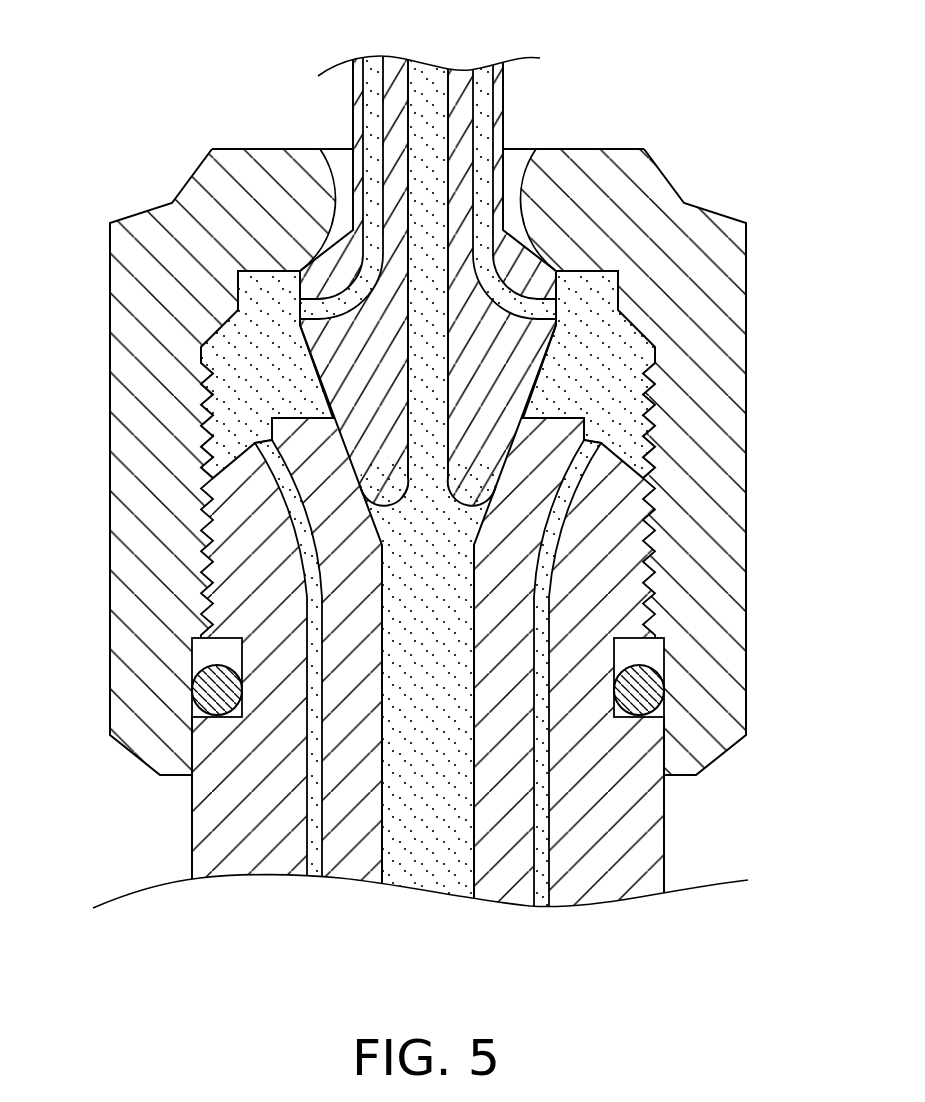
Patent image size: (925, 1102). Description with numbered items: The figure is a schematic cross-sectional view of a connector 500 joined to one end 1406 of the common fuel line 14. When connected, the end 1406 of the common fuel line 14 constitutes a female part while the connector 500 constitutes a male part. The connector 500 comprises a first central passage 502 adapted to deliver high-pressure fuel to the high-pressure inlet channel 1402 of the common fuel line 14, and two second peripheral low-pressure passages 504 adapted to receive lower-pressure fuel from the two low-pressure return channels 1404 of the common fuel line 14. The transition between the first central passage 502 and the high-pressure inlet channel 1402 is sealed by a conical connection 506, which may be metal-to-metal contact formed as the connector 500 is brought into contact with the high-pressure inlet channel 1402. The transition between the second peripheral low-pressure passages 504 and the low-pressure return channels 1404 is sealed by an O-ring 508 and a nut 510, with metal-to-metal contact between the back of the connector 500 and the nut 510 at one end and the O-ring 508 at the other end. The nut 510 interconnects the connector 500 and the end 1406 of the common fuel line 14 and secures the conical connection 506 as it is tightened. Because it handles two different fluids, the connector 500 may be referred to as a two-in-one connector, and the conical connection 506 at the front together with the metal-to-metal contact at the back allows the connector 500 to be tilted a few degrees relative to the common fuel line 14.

The connector 500 is at (429, 496).
The first central passage 502 is at (431, 88).
The second peripheral low-pressure passage 504 is at (374, 84).
The conical connection 506 is at (376, 428).
The O-ring 508 is at (213, 697).
The nut 510 is at (704, 470).
The high-pressure inlet channel 1402 is at (426, 868).
The low-pressure return channel 1404 is at (313, 862).
The end of the common fuel line 1406 is at (506, 553).
The common fuel line 14 is at (639, 934).